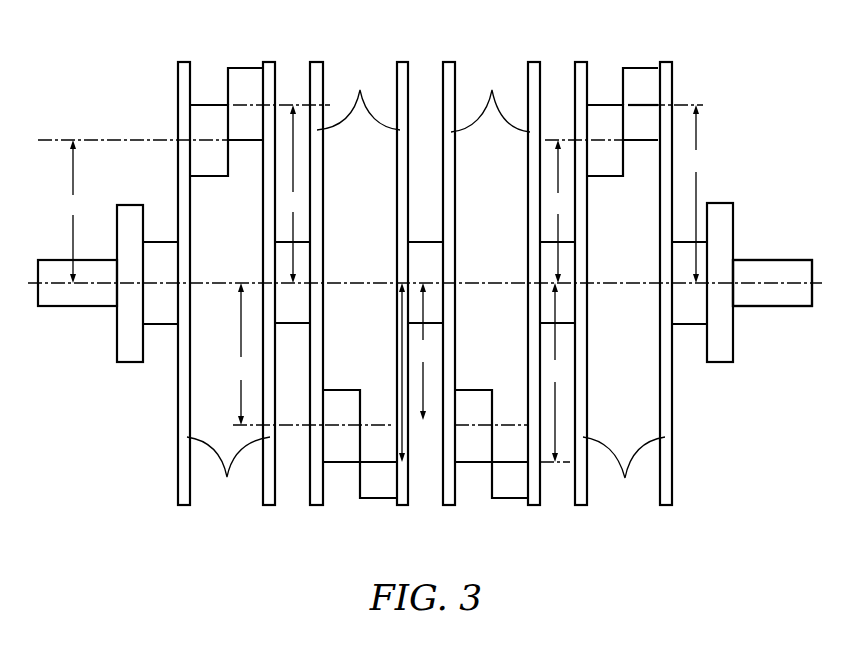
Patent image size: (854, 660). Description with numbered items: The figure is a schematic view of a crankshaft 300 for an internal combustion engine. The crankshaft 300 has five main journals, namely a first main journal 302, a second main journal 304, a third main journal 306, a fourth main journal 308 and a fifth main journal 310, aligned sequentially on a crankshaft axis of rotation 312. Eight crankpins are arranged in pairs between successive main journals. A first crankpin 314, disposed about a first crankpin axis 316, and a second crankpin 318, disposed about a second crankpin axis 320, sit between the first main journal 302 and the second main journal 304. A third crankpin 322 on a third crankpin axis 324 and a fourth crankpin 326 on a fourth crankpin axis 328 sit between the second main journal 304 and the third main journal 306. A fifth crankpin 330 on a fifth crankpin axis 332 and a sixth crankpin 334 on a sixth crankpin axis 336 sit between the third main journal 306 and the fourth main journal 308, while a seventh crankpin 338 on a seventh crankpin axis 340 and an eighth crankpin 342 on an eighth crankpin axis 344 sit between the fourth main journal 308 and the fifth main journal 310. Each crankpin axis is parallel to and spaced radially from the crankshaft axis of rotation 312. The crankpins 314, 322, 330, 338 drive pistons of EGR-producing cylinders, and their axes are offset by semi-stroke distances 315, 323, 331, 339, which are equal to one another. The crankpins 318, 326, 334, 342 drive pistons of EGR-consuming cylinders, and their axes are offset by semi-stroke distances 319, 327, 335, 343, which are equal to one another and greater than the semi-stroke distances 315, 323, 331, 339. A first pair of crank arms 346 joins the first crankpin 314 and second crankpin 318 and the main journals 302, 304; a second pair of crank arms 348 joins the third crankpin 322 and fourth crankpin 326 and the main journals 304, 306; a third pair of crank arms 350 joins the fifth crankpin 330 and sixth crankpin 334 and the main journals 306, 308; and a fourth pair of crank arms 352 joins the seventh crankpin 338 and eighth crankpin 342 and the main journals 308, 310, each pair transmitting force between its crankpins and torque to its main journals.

The crankshaft 300 is at (714, 60).
The first main journal 302 is at (162, 305).
The second main journal 304 is at (290, 300).
The third main journal 306 is at (425, 268).
The fourth main journal 308 is at (548, 266).
The fifth main journal 310 is at (689, 302).
The crankshaft axis of rotation 312 is at (773, 280).
The first crankpin 314 is at (208, 117).
The semi-stroke distance 315 is at (60, 214).
The first crankpin axis 316 is at (212, 143).
The second crankpin 318 is at (245, 86).
The semi-stroke distance 319 is at (279, 211).
The second crankpin axis 320 is at (250, 103).
The third crankpin 322 is at (343, 450).
The semi-stroke distance 323 is at (227, 377).
The third crankpin axis 324 is at (342, 425).
The fourth crankpin 326 is at (378, 487).
The semi-stroke distance 327 is at (400, 327).
The fourth crankpin axis 328 is at (371, 462).
The fifth crankpin 330 is at (461, 427).
The semi-stroke distance 331 is at (412, 360).
The fifth crankpin axis 332 is at (475, 405).
The sixth crankpin 334 is at (513, 486).
The semi-stroke distance 335 is at (544, 380).
The sixth crankpin axis 336 is at (515, 462).
The seventh crankpin 338 is at (606, 117).
The semi-stroke distance 339 is at (544, 212).
The seventh crankpin axis 340 is at (600, 143).
The eighth crankpin 342 is at (640, 86).
The semi-stroke distance 343 is at (683, 169).
The eighth crankpin axis 344 is at (649, 103).
The first pair of crank arms 346 is at (228, 470).
The second pair of crank arms 348 is at (358, 98).
The third pair of crank arms 350 is at (490, 99).
The fourth pair of crank arms 352 is at (624, 472).